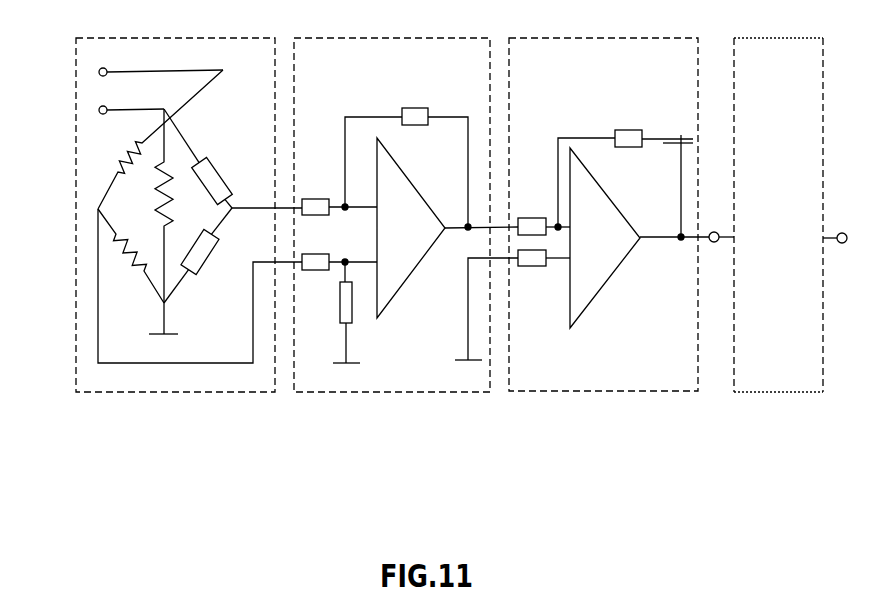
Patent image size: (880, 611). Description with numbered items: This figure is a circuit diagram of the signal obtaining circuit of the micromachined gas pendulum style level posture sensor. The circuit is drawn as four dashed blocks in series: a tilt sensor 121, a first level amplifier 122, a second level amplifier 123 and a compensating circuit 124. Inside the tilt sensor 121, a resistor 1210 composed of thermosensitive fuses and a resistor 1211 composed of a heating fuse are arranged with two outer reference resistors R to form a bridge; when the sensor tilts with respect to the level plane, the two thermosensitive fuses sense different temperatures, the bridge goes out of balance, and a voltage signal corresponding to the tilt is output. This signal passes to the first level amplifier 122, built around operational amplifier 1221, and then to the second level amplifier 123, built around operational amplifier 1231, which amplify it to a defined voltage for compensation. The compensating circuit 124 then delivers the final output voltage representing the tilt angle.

The tilt sensor 121 is at (158, 235).
The first level amplifier 122 is at (406, 235).
The second level amplifier 123 is at (621, 235).
The compensating circuit 124 is at (800, 235).
The resistor composed of thermosensitive fuses 1210 is at (125, 160).
The resistor composed of a heating fuse 1211 is at (165, 178).
The operational amplifier 1221 is at (411, 228).
The operational amplifier 1231 is at (605, 238).